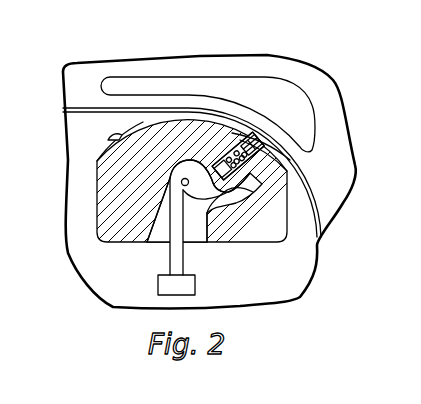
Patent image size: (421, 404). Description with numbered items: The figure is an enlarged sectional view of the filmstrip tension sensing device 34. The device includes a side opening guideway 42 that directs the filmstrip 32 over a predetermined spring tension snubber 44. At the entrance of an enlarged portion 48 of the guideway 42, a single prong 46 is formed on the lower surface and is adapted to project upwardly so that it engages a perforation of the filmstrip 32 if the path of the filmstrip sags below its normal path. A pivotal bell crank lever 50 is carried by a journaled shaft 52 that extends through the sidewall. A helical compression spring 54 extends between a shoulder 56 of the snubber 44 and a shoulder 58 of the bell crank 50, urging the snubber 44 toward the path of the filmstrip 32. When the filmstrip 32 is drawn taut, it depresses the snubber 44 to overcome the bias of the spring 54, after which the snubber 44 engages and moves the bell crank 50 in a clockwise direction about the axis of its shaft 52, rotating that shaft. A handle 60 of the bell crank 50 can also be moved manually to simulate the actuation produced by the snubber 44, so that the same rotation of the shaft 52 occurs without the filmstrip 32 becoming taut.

The filmstrip 32 is at (323, 222).
The tension sensing device 34 is at (233, 77).
The side opening guideway 42 is at (261, 122).
The spring tension snubber 44 is at (253, 137).
The prong 46 is at (120, 137).
The enlarged portion 48 is at (117, 125).
The bell crank lever 50 is at (177, 260).
The journaled shaft 52 is at (188, 186).
The helical compression spring 54 is at (242, 146).
The shoulder 56 is at (232, 133).
The shoulder 58 is at (253, 192).
The handle 60 is at (193, 288).